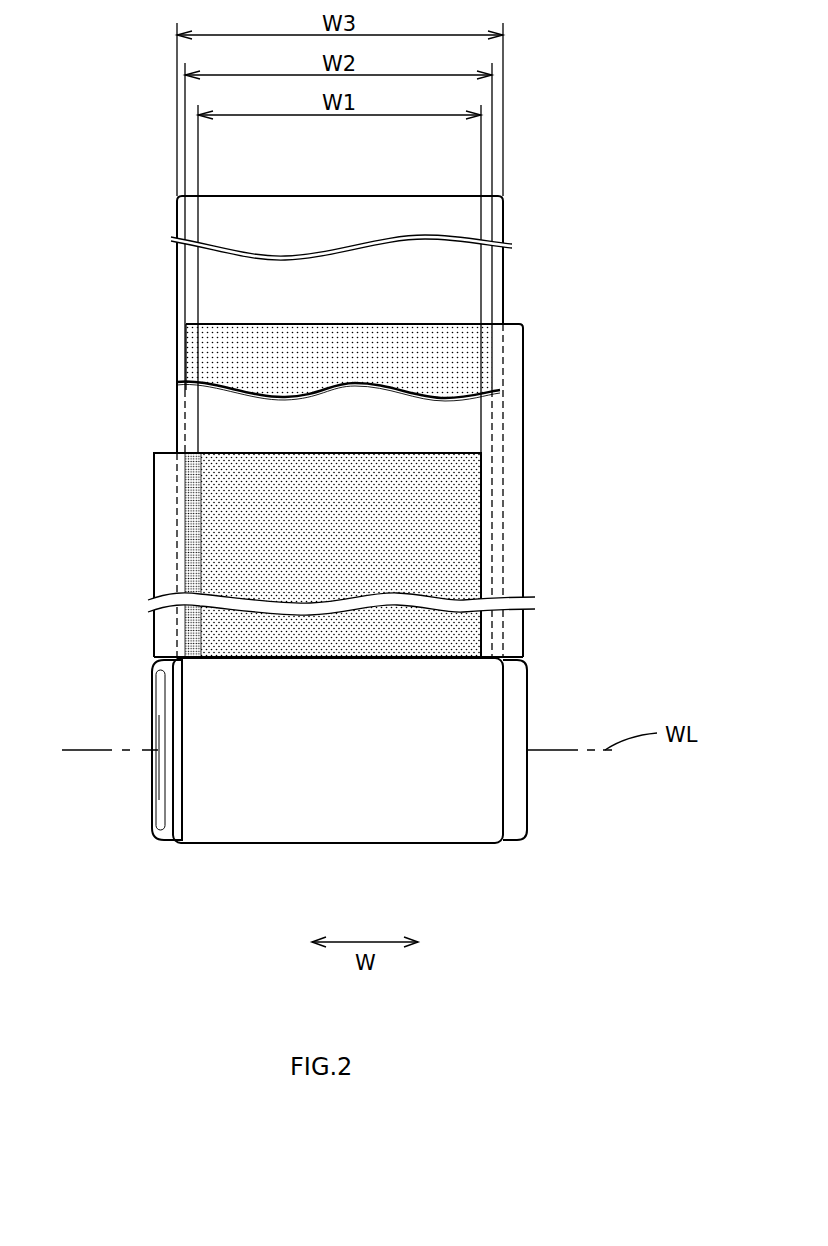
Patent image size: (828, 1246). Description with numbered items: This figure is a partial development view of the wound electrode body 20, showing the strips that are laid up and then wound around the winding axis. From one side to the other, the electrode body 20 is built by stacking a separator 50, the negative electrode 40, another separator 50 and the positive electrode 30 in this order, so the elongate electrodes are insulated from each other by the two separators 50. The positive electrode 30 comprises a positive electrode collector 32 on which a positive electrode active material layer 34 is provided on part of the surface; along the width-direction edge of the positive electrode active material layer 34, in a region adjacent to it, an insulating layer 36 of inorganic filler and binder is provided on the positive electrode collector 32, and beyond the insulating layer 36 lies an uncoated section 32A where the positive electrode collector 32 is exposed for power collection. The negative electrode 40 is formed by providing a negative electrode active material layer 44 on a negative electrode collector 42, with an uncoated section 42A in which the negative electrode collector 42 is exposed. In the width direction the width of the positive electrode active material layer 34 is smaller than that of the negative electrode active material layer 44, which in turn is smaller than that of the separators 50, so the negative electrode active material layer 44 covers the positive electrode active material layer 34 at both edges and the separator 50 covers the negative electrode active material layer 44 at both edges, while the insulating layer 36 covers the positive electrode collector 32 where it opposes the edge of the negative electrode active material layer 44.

The wound electrode body 20 is at (557, 180).
The positive electrode 30 is at (488, 562).
The positive electrode collector 32 is at (153, 475).
The uncoated section 32A is at (164, 585).
The positive electrode active material layer 34 is at (232, 545).
The insulating layer 36 is at (190, 562).
The negative electrode 40 is at (524, 398).
The negative electrode collector 42 is at (524, 497).
The uncoated section 42A is at (512, 447).
The negative electrode active material layer 44 is at (429, 353).
The separator 50 is at (177, 296).